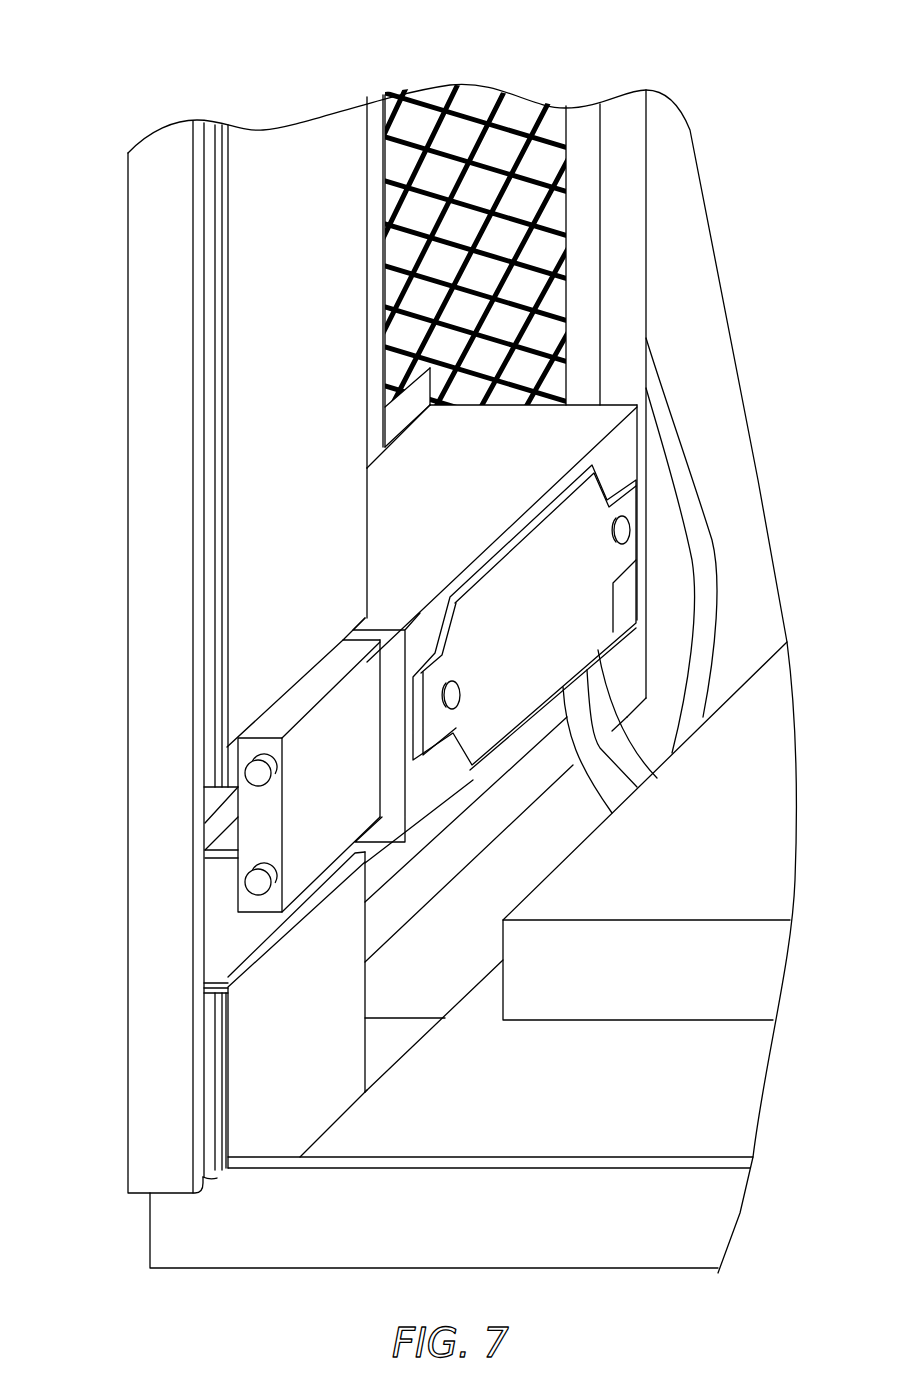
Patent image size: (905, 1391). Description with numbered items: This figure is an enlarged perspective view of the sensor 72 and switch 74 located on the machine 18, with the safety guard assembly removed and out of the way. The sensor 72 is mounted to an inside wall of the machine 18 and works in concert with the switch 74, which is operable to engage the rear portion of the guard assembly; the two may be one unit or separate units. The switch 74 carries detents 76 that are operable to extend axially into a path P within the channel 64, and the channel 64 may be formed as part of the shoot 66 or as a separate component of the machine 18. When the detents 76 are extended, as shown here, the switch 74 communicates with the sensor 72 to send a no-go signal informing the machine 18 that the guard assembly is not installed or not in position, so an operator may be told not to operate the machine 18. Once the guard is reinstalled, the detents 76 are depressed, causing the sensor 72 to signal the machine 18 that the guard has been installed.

The machine 18 is at (452, 137).
The channel 64 is at (212, 678).
The shoot 66 is at (312, 433).
The sensor 72 is at (547, 623).
The switch 74 is at (348, 782).
The detents 76 is at (258, 775).
The path P is at (213, 1180).